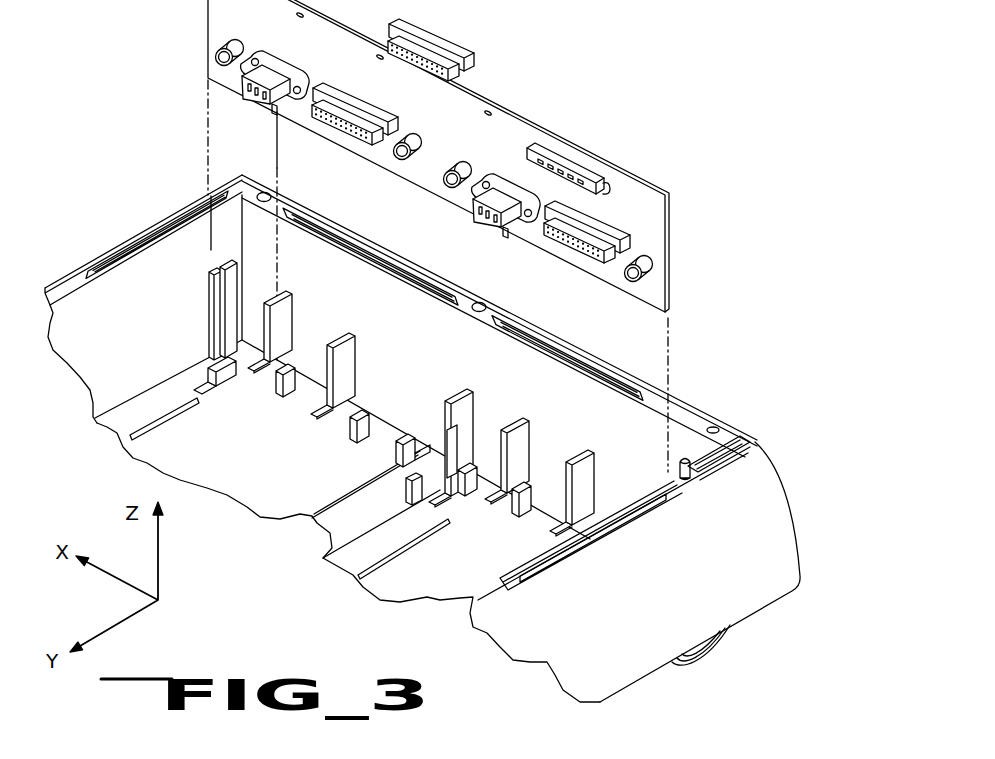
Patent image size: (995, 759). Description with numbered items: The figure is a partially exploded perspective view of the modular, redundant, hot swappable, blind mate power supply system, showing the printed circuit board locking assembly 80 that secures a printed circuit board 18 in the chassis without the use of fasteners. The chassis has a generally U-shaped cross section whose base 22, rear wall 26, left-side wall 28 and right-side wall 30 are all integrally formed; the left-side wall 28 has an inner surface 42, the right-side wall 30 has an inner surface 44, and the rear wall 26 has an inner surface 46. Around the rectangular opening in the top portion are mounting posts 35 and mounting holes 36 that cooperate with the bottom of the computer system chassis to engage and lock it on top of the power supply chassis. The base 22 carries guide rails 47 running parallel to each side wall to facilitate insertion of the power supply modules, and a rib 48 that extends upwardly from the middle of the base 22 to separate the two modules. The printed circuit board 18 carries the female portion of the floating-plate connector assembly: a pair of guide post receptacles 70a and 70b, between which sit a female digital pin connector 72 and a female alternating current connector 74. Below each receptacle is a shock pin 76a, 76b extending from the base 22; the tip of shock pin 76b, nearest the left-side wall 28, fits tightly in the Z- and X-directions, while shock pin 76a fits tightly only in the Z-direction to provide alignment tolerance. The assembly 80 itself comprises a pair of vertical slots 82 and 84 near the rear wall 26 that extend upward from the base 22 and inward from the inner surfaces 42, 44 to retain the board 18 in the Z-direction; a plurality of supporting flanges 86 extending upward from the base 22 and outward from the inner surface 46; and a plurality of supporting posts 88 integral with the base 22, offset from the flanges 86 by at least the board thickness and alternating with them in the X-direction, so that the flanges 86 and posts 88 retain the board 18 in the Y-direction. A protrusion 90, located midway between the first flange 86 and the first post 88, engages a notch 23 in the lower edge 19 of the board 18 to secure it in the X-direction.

The printed circuit board 18 is at (635, 195).
The lower edge 19 is at (222, 93).
The base 22 is at (223, 471).
The notch 23 is at (275, 115).
The rear wall 26 is at (395, 336).
The left-side wall 28 is at (120, 312).
The right-side wall 30 is at (699, 538).
The mounting posts 35 is at (692, 472).
The mounting holes 36 is at (272, 195).
The inner surface 42 is at (142, 242).
The inner surface 44 is at (696, 452).
The inner surface 46 is at (605, 395).
The guide rails 47 is at (150, 437).
The rib 48 is at (320, 538).
The guide post receptacle 70a is at (407, 162).
The guide post receptacle 70b is at (210, 46).
The female digital pin connector 72 is at (349, 100).
The female alternating current connector 74 is at (431, 40).
The shock pin 76a is at (405, 440).
The shock pin 76b is at (208, 355).
The assembly 80 is at (715, 326).
The vertical slot 82 is at (158, 228).
The vertical slot 84 is at (658, 487).
The supporting flanges 86 is at (282, 301).
The supporting posts 88 is at (288, 400).
The protrusion 90 is at (265, 378).